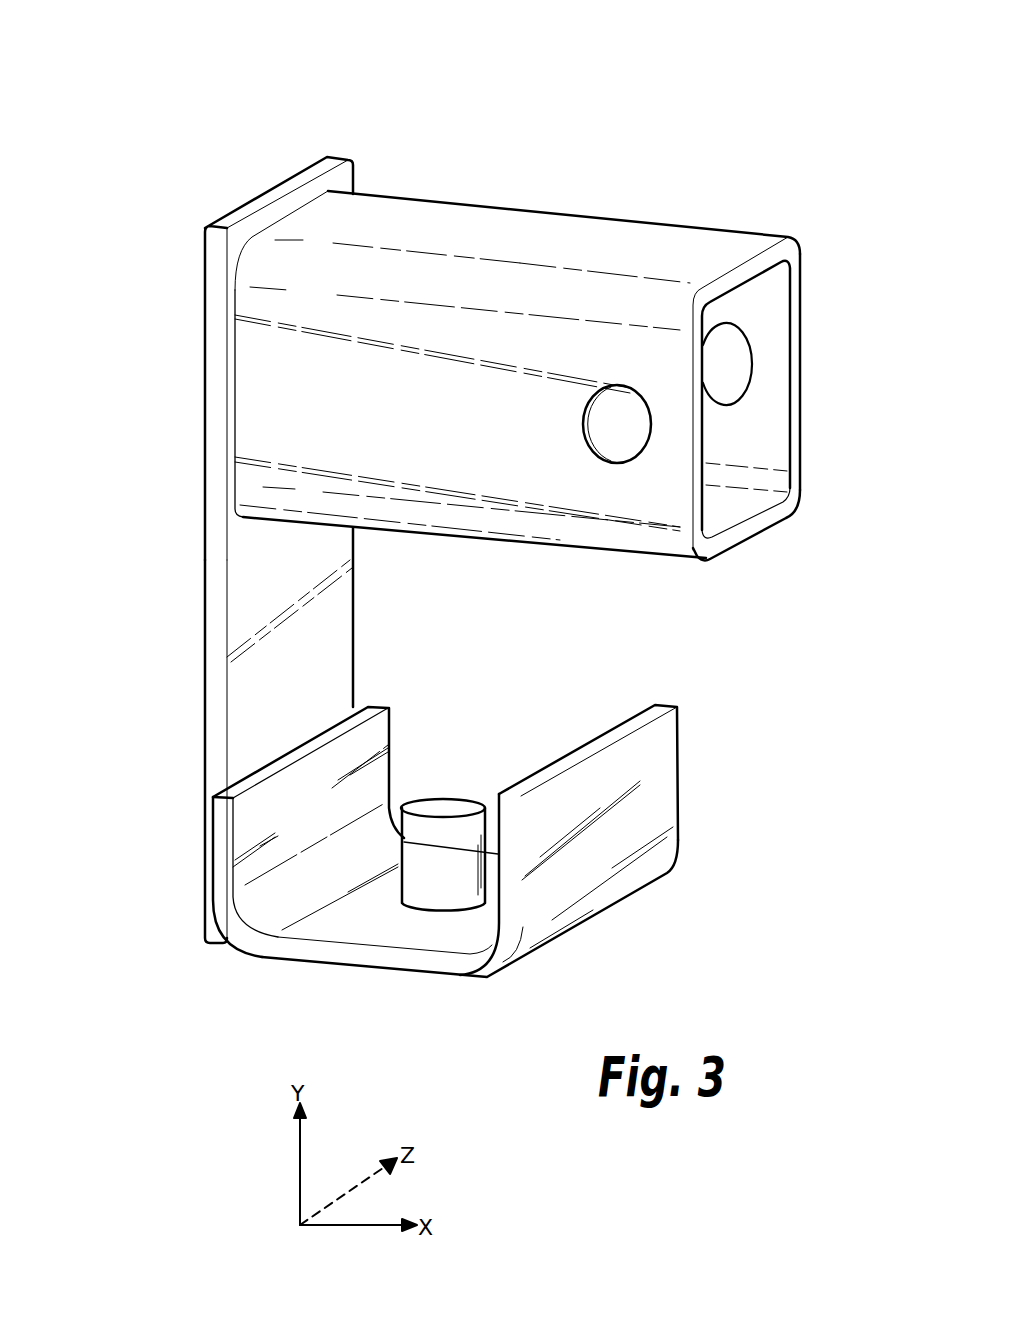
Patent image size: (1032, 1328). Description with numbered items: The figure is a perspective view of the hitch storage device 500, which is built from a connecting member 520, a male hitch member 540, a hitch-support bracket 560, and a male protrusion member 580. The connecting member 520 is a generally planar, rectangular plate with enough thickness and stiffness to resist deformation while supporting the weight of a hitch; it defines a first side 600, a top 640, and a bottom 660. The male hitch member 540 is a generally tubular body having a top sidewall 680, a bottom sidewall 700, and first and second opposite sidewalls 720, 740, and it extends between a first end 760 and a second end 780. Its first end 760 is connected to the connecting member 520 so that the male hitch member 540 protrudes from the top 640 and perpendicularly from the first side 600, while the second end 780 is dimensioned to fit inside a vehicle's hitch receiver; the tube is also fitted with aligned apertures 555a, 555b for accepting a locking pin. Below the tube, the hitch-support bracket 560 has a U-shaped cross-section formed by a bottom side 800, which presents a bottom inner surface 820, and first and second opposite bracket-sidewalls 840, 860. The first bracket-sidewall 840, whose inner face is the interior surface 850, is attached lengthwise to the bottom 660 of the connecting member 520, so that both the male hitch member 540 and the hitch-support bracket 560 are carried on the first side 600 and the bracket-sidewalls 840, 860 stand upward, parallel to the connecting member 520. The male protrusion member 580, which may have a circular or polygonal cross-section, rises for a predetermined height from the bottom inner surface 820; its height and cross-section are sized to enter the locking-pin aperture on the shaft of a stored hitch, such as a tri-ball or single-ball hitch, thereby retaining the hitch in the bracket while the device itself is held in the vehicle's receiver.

The hitch storage device 500 is at (479, 142).
The connecting member 520 is at (203, 606).
The male hitch member 540 is at (588, 213).
The aperture 555a is at (733, 365).
The aperture 555b is at (607, 433).
The hitch-support bracket 560 is at (618, 908).
The male protrusion member 580 is at (449, 832).
The first side 600 is at (315, 695).
The top 640 is at (204, 288).
The bottom 660 is at (203, 871).
The top sidewall 680 is at (560, 255).
The bottom sidewall 700 is at (598, 558).
The first sidewall 720 is at (797, 302).
The second sidewall 740 is at (420, 433).
The first end 760 is at (288, 268).
The second end 780 is at (769, 442).
The bottom side 800 is at (342, 952).
The bottom inner surface 820 is at (362, 913).
The first bracket-sidewall 840 is at (265, 768).
The interior surface 850 is at (328, 823).
The second bracket-sidewall 860 is at (652, 808).